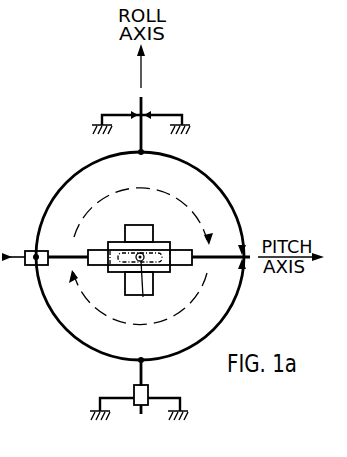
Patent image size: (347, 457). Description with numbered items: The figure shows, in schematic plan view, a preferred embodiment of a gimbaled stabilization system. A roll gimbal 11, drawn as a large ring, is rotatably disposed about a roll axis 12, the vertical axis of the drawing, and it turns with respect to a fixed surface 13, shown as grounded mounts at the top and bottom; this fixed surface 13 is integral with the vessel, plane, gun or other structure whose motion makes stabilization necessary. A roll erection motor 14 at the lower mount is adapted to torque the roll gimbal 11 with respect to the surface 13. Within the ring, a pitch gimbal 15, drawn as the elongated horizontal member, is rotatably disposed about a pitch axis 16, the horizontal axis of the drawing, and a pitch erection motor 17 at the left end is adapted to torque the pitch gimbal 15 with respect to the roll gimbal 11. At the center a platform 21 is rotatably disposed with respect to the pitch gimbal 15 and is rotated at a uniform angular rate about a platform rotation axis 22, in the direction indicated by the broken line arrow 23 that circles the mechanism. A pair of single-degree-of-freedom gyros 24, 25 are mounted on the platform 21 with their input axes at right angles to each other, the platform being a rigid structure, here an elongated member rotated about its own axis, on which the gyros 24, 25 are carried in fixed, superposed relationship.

The roll gimbal 11 is at (207, 175).
The roll axis 12 is at (139, 382).
The fixed surface 13 is at (101, 125).
The roll erection motor 14 is at (150, 392).
The pitch gimbal 15 is at (100, 250).
The pitch axis 16 is at (66, 250).
The pitch erection motor 17 is at (33, 266).
The platform 21 is at (144, 254).
The platform rotation axis 22 is at (143, 297).
The broken line arrow 23 is at (137, 188).
The single-degree-of-freedom gyro 24 is at (117, 273).
The single-degree-of-freedom gyro 25 is at (128, 294).